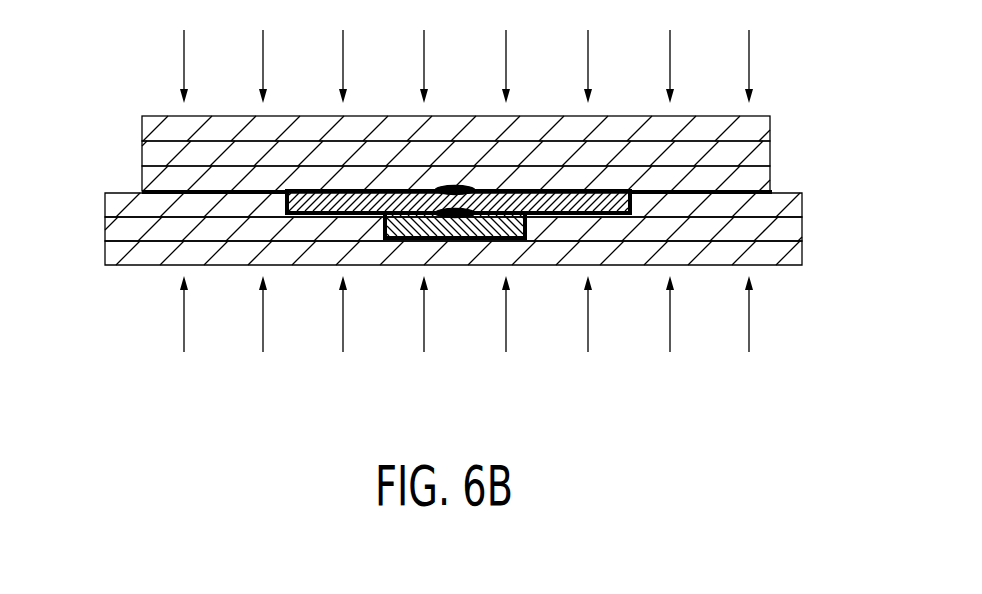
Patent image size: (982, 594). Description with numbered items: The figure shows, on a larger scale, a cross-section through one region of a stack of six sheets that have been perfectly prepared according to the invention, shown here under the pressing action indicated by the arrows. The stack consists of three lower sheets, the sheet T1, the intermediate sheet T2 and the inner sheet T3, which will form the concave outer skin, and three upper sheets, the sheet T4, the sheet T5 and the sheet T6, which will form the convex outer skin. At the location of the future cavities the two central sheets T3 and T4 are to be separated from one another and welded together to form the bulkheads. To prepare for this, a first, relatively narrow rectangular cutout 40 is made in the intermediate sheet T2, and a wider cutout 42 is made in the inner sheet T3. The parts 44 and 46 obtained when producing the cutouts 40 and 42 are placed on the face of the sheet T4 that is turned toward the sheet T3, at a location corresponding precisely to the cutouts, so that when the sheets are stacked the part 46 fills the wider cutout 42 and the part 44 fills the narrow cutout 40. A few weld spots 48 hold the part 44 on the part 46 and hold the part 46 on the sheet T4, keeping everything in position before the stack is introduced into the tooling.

The first cutout 40 is at (415, 239).
The wider cutout 42 is at (322, 214).
The part 44 is at (499, 239).
The part 46 is at (585, 202).
The weld spots 48 is at (450, 213).
The sheet T1 is at (783, 253).
The intermediate sheet T2 is at (780, 232).
The inner sheet T3 is at (784, 206).
The sheet T4 is at (163, 178).
The sheet T5 is at (167, 157).
The sheet T6 is at (158, 125).